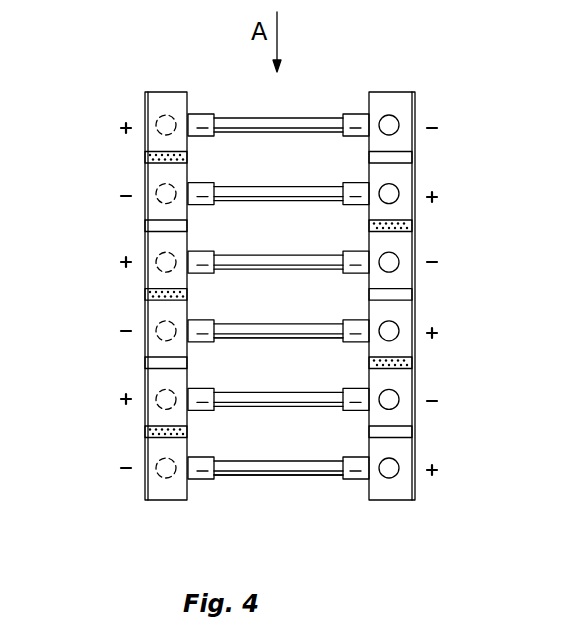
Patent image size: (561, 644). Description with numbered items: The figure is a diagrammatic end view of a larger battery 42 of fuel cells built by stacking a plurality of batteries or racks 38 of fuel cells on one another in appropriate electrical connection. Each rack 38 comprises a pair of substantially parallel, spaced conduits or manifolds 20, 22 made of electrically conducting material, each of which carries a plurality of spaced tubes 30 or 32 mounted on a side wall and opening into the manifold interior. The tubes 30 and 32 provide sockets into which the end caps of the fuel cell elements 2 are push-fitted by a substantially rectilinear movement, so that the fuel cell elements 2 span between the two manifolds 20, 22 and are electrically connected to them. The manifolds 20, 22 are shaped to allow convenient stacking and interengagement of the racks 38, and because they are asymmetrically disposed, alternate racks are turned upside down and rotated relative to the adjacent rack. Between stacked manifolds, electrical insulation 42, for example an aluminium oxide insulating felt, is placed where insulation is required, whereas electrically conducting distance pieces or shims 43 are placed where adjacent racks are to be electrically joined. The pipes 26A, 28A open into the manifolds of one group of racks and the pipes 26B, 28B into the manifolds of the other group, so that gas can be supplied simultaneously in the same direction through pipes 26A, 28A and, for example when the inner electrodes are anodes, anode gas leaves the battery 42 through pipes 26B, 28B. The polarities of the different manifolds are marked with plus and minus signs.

The fuel cell element 2 is at (272, 111).
The manifold 20 is at (396, 92).
The manifold 22 is at (155, 92).
The pipe 26A is at (394, 120).
The pipe 26B is at (163, 186).
The pipe 28A is at (394, 190).
The pipe 28B is at (163, 116).
The socket tube 30 is at (350, 112).
The socket tube 32 is at (200, 116).
The rack of fuel cells 38 is at (257, 322).
The battery of fuel cells 42 is at (413, 226).
The electrically conducting distance piece 43 is at (405, 158).